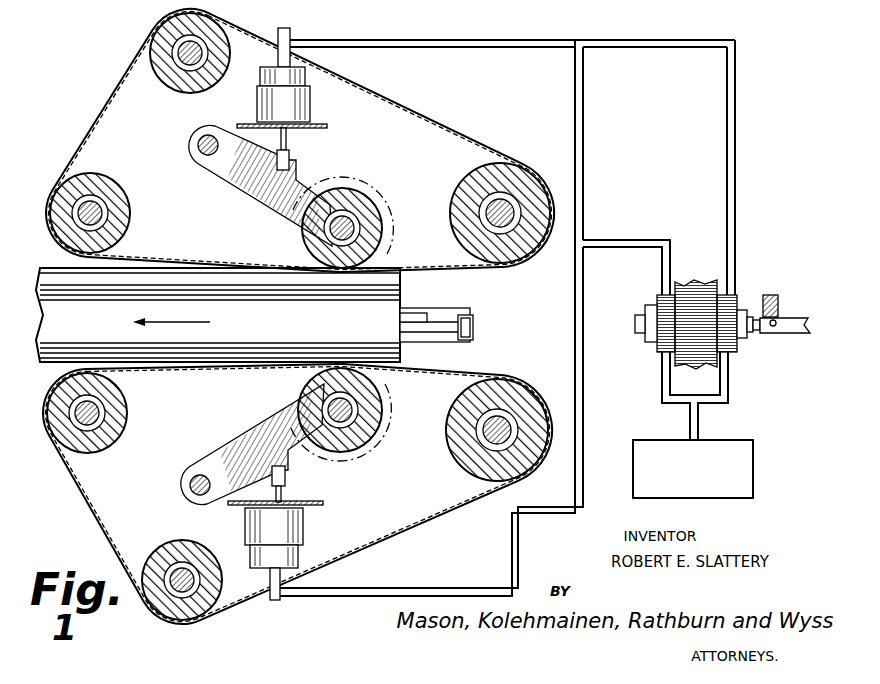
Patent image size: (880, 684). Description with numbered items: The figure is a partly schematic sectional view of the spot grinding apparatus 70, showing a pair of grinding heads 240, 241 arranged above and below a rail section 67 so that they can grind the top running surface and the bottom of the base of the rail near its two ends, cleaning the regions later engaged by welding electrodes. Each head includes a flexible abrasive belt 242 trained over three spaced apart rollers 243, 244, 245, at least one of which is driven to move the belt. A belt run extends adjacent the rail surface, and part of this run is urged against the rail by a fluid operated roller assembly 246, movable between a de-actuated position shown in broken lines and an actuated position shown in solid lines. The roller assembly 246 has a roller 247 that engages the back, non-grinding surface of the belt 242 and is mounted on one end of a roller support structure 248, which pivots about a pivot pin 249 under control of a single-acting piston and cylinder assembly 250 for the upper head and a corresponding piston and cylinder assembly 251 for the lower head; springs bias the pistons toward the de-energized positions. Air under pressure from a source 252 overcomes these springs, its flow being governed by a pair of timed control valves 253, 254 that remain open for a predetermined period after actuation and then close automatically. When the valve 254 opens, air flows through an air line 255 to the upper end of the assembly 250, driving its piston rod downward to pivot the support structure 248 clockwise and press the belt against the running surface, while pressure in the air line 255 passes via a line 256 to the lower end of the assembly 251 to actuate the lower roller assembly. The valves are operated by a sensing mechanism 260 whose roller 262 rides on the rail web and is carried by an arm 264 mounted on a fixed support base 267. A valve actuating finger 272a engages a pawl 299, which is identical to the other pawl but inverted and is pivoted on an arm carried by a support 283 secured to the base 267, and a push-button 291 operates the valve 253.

The apparatus 70 is at (84, 102).
The tube 67 is at (70, 340).
The grinding head 240 is at (447, 100).
The grinding head 241 is at (427, 520).
The flexible abrasive belt 242 is at (457, 127).
The roller 243 is at (457, 180).
The roller 244 is at (117, 187).
The roller 245 is at (190, 88).
The fluid operated roller assembly 246 is at (317, 173).
The roller 247 is at (377, 253).
The roller support structure 248 is at (267, 193).
The pivot pin 249 is at (197, 142).
The piston and cylinder assembly 250 is at (322, 92).
The piston and cylinder assembly 251 is at (315, 527).
The source 252 is at (757, 458).
The timed control valve 253 is at (660, 297).
The timed control valve 254 is at (730, 308).
The air line 255 is at (505, 38).
The line 256 is at (578, 402).
The sensing mechanism 260 is at (463, 300).
The roller 262 is at (417, 312).
The arm 264 is at (443, 328).
The support base 267 is at (468, 305).
The valve actuating finger 272a is at (794, 312).
The support 283 is at (692, 290).
The push-button 291 is at (636, 320).
The pawl 299 is at (773, 330).